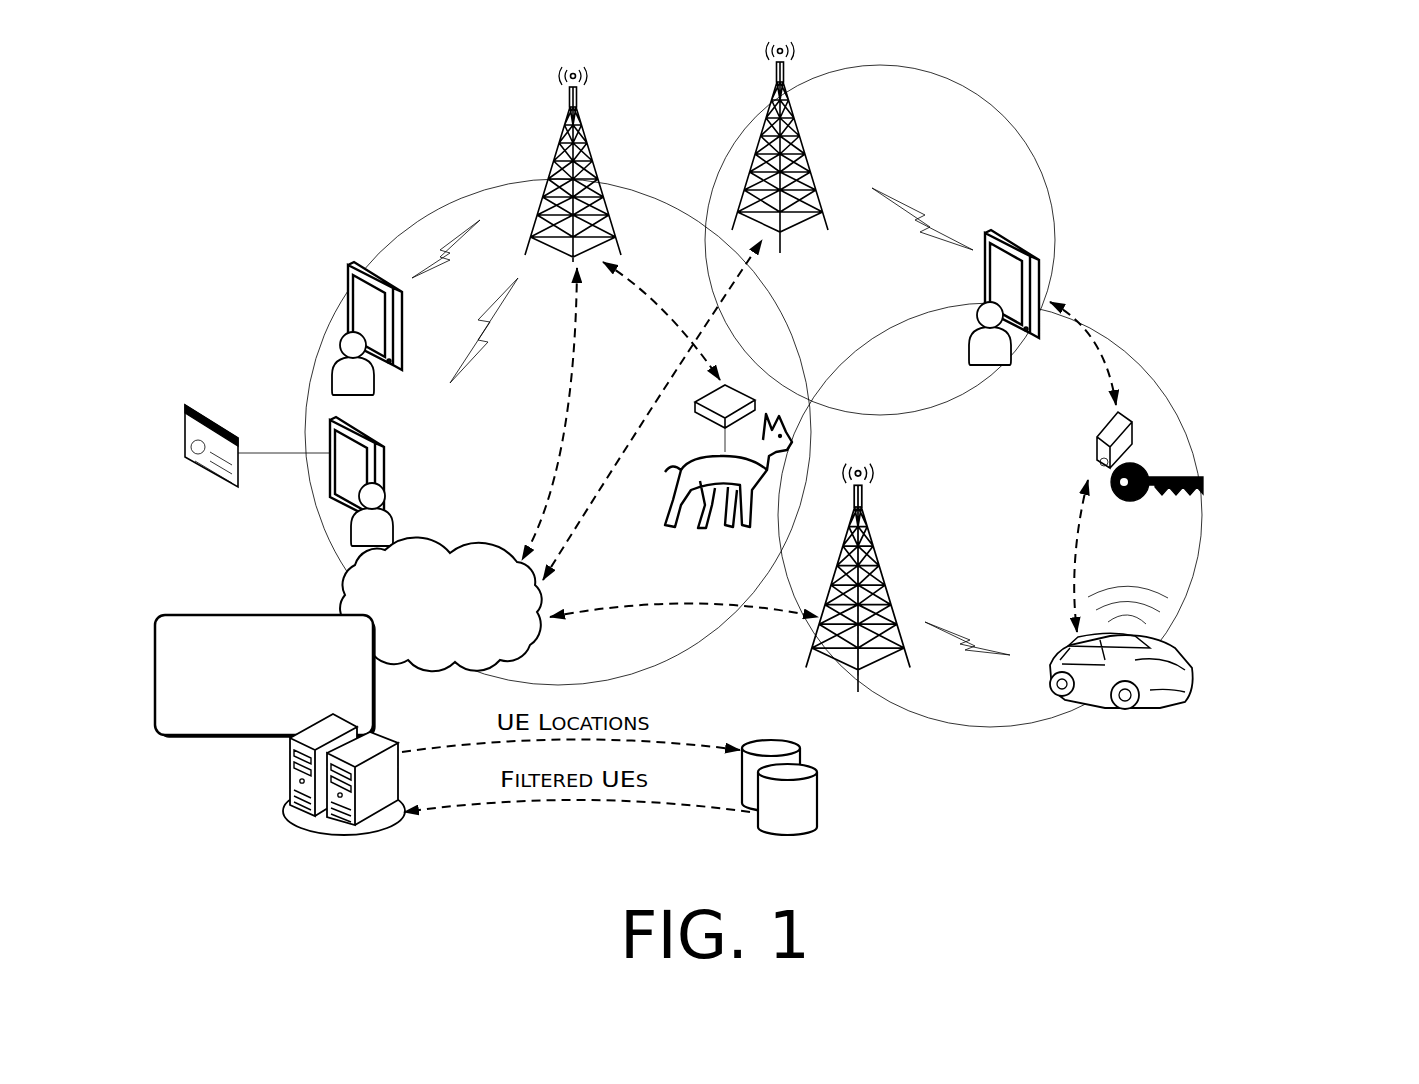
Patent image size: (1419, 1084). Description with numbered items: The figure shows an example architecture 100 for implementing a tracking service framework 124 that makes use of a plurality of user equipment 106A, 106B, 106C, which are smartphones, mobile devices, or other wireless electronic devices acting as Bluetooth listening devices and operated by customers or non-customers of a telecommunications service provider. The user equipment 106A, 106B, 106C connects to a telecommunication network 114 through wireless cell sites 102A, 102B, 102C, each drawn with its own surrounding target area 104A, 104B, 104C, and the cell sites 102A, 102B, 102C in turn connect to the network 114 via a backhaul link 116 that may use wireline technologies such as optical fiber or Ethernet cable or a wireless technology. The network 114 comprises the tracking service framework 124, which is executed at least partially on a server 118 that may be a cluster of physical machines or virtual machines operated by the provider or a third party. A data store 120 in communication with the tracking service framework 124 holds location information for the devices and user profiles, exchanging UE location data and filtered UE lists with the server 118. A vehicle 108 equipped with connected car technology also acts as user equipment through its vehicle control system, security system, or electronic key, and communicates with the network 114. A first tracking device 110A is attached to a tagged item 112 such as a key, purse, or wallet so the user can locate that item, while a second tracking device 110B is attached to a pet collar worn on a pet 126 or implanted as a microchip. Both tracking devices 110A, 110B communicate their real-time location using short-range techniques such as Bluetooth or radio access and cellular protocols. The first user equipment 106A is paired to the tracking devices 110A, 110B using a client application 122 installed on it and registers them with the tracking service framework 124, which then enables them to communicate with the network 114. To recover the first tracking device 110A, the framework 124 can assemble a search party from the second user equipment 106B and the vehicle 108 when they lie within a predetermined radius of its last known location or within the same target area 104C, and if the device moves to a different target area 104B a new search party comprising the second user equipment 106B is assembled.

The architecture 100 is at (1266, 130).
The cell site 102A is at (569, 116).
The cell site 102B is at (800, 158).
The cell site 102C is at (880, 580).
The target area 104A is at (418, 214).
The target area 104B is at (1005, 127).
The target area 104C is at (1052, 716).
The first user equipment 106A is at (382, 462).
The second user equipment 106B is at (1028, 250).
The user equipment 106C is at (362, 264).
The vehicle 108 is at (1160, 704).
The first tracking device 110A is at (1128, 422).
The second tracking device 110B is at (748, 398).
The tagged item 112 is at (1202, 477).
The network 114 is at (441, 605).
The backhaul link 116 is at (632, 608).
The server 118 is at (302, 826).
The data store 120 is at (800, 762).
The client application 122 is at (212, 418).
The tracking service framework 124 is at (265, 676).
The pet 126 is at (702, 447).